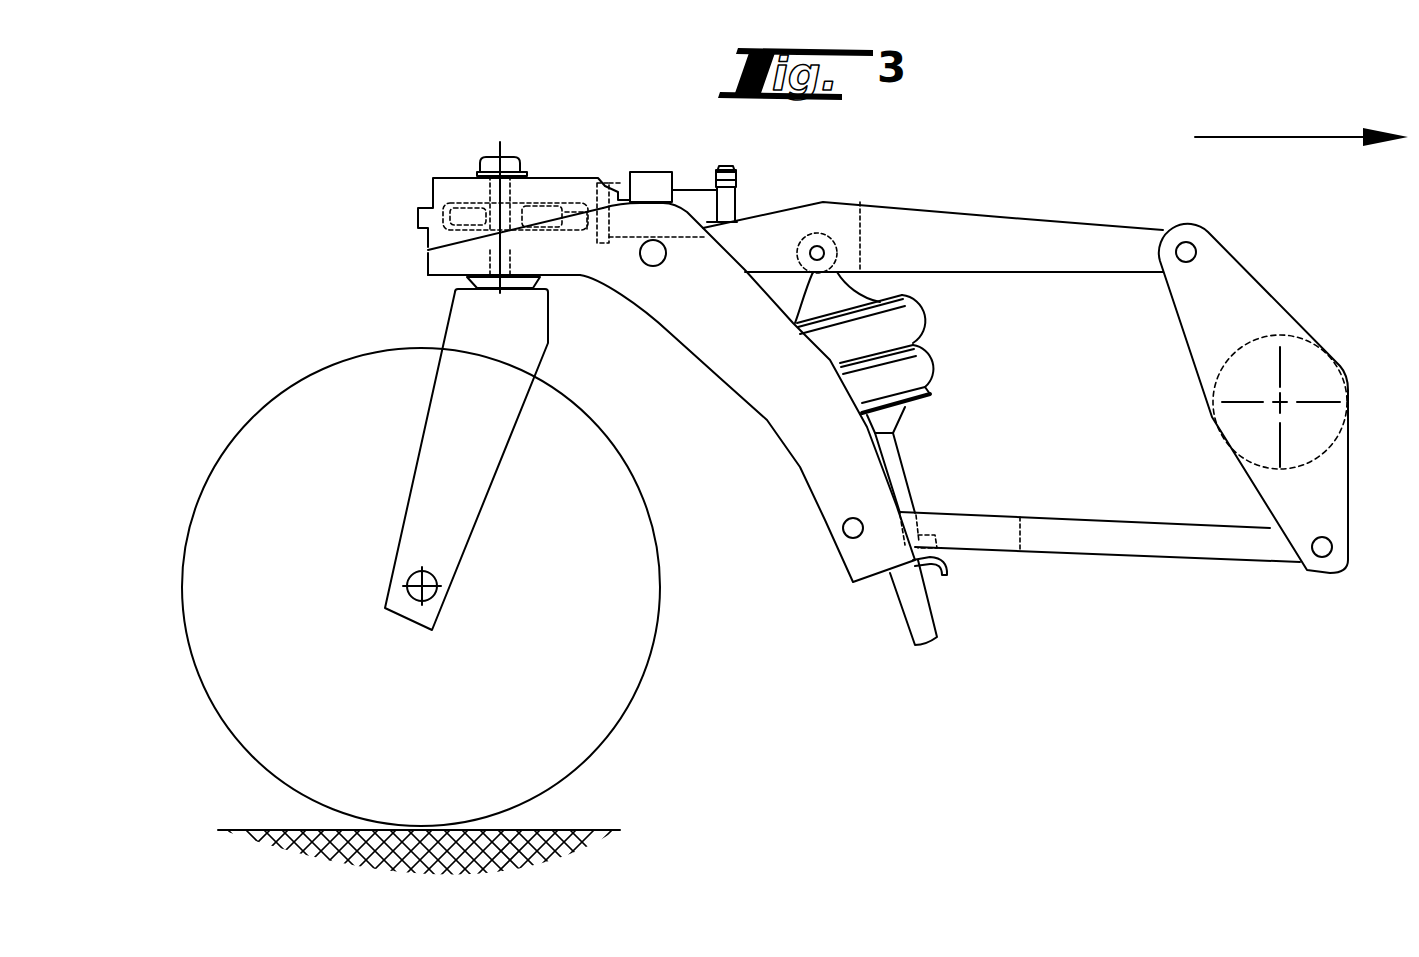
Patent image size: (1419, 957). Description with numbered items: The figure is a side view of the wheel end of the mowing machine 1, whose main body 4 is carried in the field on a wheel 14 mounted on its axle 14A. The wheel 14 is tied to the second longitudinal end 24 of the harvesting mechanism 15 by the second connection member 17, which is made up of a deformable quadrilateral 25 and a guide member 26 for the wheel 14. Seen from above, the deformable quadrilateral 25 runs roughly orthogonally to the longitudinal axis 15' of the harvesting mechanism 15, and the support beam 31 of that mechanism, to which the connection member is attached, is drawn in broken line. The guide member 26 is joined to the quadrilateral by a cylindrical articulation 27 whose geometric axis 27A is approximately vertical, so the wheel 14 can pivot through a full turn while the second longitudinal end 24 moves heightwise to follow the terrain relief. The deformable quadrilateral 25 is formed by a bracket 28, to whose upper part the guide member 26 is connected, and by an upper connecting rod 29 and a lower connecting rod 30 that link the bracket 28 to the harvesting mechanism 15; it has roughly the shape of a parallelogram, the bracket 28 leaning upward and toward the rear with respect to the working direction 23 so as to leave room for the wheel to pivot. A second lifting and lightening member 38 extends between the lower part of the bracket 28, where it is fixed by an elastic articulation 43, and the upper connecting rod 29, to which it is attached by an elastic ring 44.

The mowing machine 1 is at (240, 248).
The main body 4 is at (1337, 577).
The wheel 14 is at (624, 666).
The wheel axle 14A is at (424, 589).
The harvesting mechanism 15 is at (1134, 346).
The longitudinal axis 15' is at (1231, 420).
The second connection member 17 is at (1007, 214).
The working direction 23 is at (1288, 136).
The second longitudinal end 24 is at (1258, 292).
The deformable quadrilateral 25 is at (1100, 233).
The guide member 26 is at (483, 458).
The cylindrical articulation 27 is at (480, 252).
The geometric axis 27A is at (502, 146).
The bracket 28 is at (800, 447).
The upper connecting rod 29 is at (1012, 274).
The connecting rod 30 is at (1205, 563).
The support beam 31 is at (1322, 462).
The second lifting and lightening member 38 is at (940, 370).
The elastic articulation 43 is at (950, 552).
The elastic ring 44 is at (821, 249).